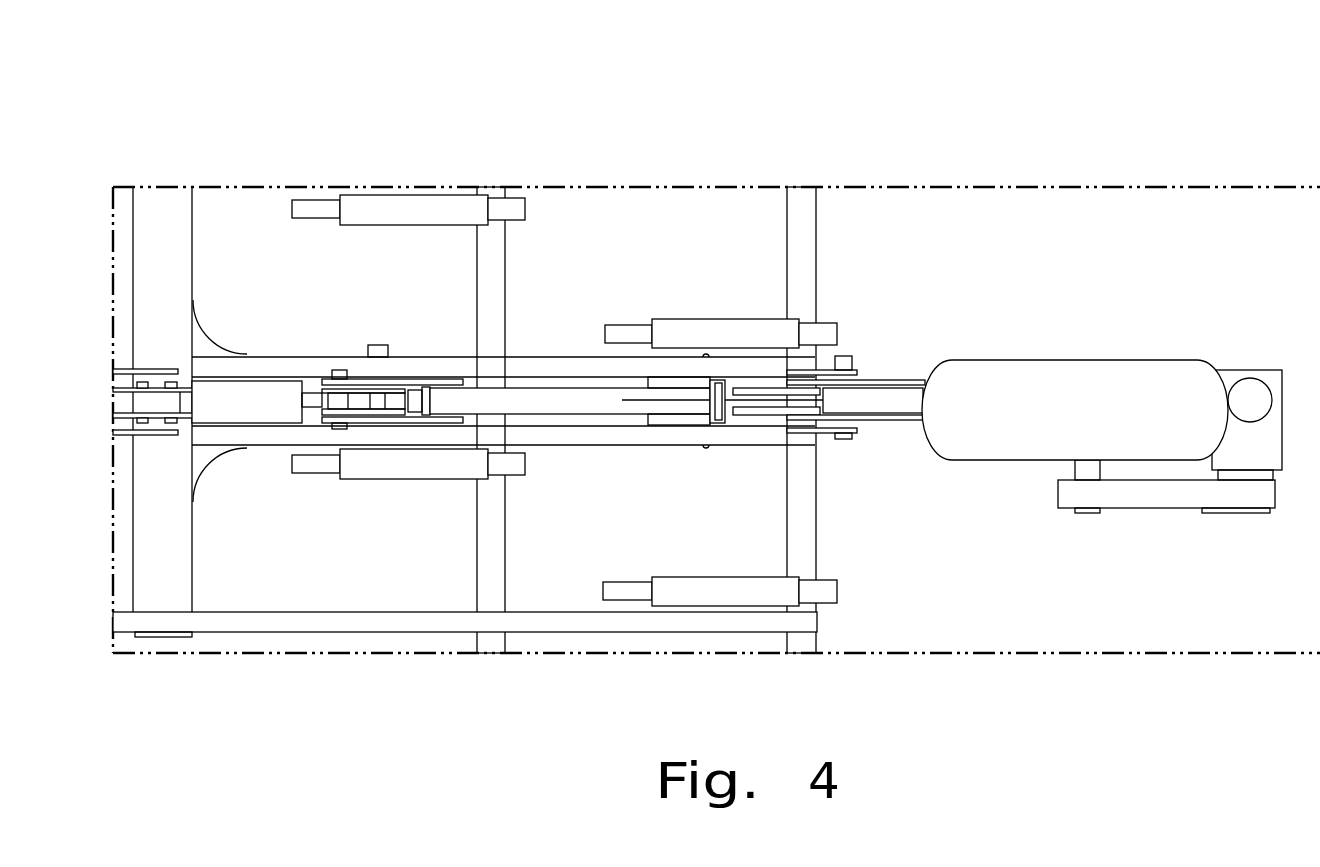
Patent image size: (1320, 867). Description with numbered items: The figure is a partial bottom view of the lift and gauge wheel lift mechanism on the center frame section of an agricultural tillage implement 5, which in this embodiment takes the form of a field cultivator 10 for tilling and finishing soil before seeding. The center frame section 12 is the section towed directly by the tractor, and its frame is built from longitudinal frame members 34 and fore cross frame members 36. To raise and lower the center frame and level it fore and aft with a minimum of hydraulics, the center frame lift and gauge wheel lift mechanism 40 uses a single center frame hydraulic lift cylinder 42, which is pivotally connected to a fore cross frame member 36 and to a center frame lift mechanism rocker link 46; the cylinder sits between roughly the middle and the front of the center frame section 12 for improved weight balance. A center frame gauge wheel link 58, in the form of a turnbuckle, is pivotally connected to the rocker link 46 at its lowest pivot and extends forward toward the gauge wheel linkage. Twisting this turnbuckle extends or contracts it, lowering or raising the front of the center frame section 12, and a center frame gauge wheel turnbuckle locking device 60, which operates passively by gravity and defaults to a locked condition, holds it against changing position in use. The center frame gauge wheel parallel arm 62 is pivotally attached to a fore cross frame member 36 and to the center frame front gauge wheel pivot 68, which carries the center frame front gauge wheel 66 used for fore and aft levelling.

The agricultural tillage implement 5 is at (461, 142).
The field cultivator 10 is at (550, 118).
The center frame section 12 is at (262, 632).
The longitudinal frame members 34 is at (347, 632).
The fore cross frame members 36 is at (505, 263).
The center frame lift and gauge wheel lift mechanism 40 is at (603, 415).
The center frame hydraulic lift cylinder 42 is at (255, 393).
The center frame lift mechanism rocker link 46 is at (403, 420).
The center frame gauge wheel link 58 is at (587, 385).
The center frame gauge wheel turnbuckle locking device 60 is at (683, 422).
The center frame gauge wheel parallel arm 62 is at (893, 417).
The center frame front gauge wheel 66 is at (1065, 360).
The center frame front gauge wheel pivot 68 is at (1250, 370).